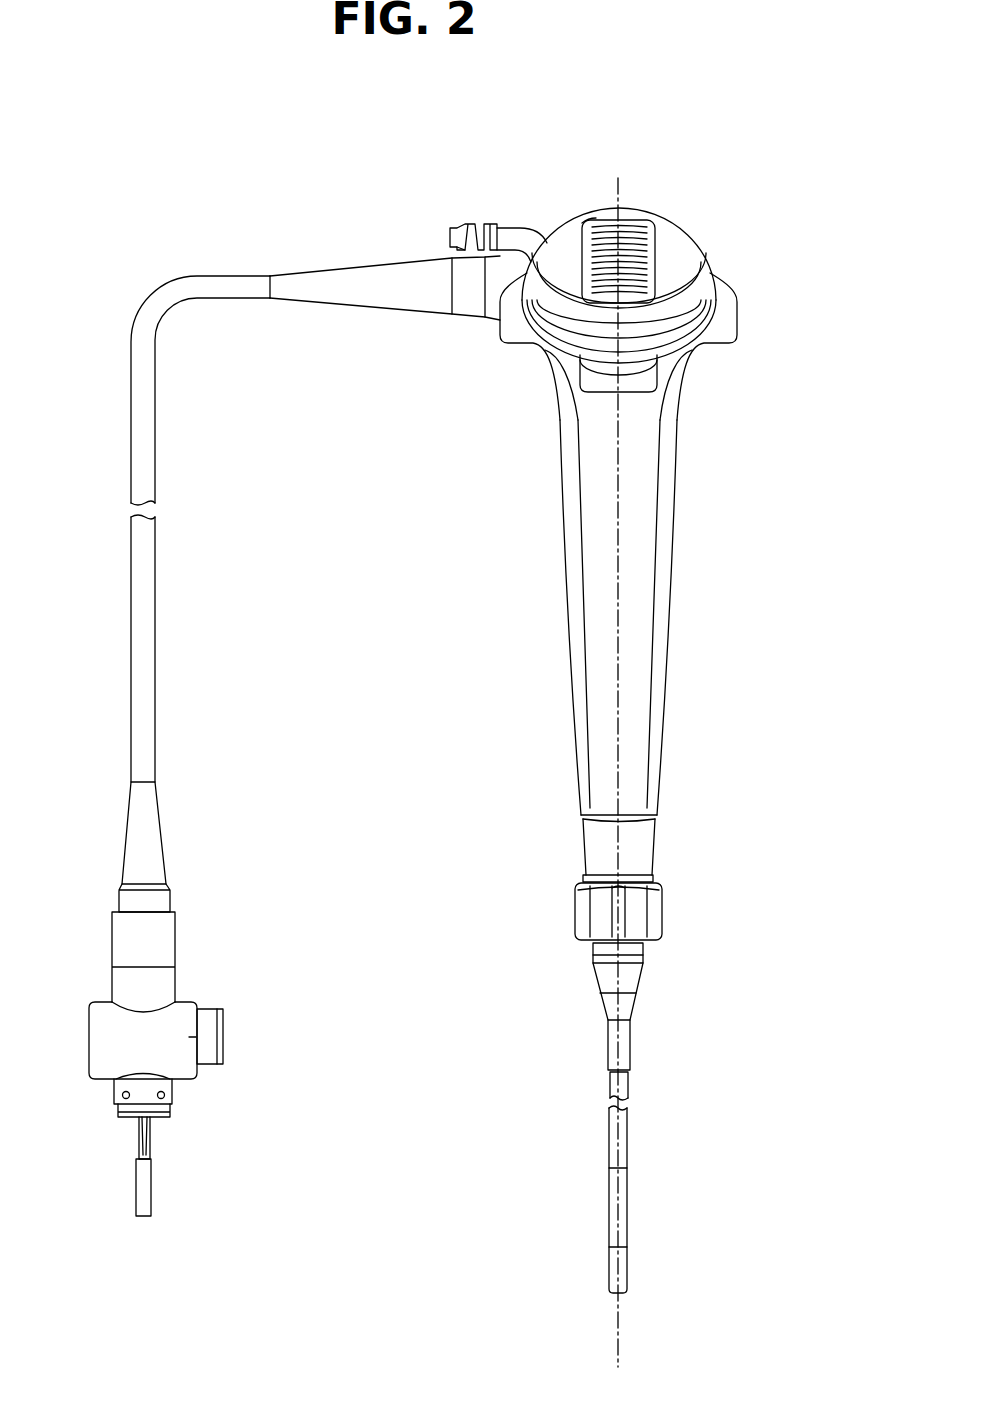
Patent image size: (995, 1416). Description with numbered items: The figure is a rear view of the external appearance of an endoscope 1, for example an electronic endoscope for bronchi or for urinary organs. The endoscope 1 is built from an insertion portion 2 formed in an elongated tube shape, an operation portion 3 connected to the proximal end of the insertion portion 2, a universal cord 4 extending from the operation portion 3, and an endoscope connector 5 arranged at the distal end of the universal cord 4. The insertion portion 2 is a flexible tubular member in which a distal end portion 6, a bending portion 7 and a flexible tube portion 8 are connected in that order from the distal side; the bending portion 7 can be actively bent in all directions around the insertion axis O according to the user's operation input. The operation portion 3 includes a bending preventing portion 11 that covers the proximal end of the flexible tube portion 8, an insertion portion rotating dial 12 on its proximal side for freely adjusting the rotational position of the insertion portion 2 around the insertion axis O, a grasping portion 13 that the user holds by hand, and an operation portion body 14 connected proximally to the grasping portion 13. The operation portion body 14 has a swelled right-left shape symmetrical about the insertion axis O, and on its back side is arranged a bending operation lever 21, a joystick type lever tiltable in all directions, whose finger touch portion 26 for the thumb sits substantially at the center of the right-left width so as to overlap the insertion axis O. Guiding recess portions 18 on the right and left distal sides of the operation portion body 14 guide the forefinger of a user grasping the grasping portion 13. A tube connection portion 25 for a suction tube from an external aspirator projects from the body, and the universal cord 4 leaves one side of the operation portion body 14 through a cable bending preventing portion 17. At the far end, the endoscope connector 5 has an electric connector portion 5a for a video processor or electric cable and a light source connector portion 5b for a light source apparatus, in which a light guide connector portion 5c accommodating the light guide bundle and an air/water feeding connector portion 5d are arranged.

The endoscope 1 is at (550, 197).
The insertion portion 2 is at (670, 1200).
The operation portion 3 is at (658, 651).
The universal cord 4 is at (238, 273).
The endoscope connector 5 is at (169, 1002).
The electric connector portion 5a is at (222, 1010).
The light source connector portion 5b is at (161, 1149).
The light guide connector portion 5c is at (136, 1178).
The air/water feeding connector portion 5d is at (139, 1134).
The distal end portion 6 is at (644, 1270).
The bending portion 7 is at (628, 1205).
The flexible tube portion 8 is at (628, 1135).
The bending preventing portion 11 is at (632, 1008).
The insertion portion rotating dial 12 is at (660, 908).
The grasping portion 13 is at (677, 578).
The operation portion body 14 is at (706, 262).
The cable bending preventing portion 17 is at (383, 256).
The guiding recess portions 18 is at (545, 356).
The bending operation lever 21 is at (593, 217).
The tube connection portion 25 is at (504, 223).
The finger touch portion 26 is at (648, 220).
The insertion axis O is at (620, 758).